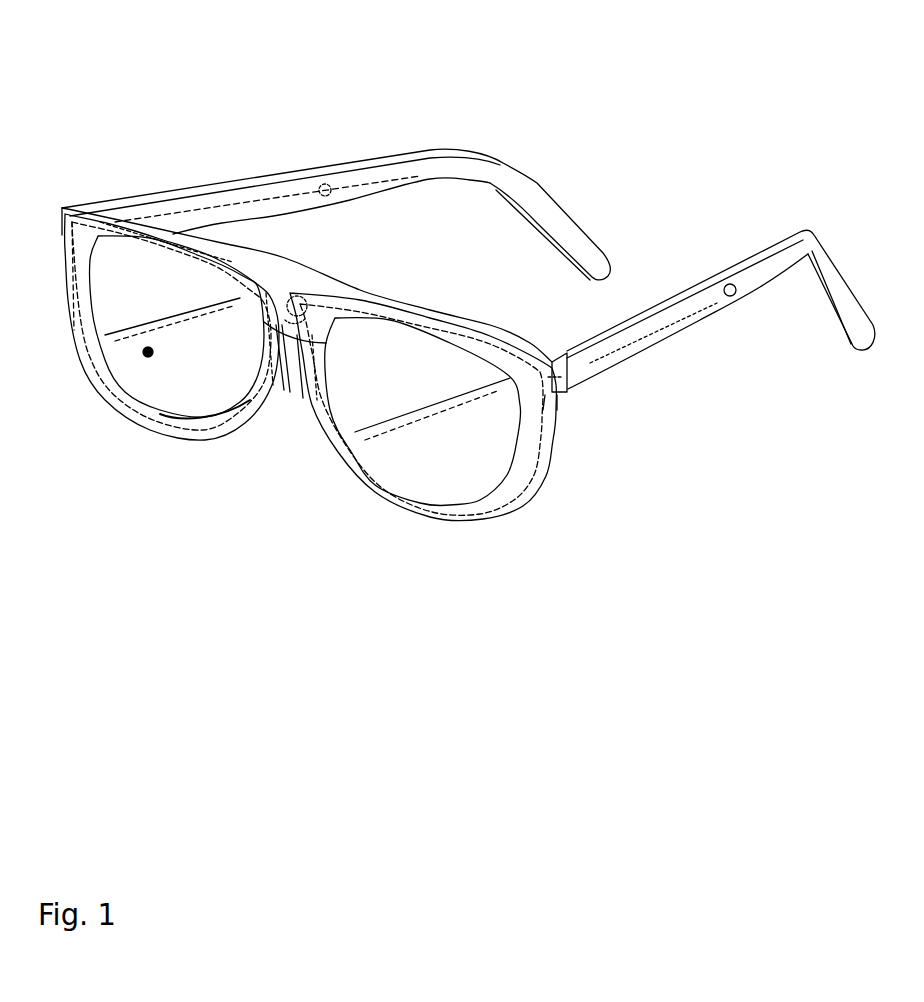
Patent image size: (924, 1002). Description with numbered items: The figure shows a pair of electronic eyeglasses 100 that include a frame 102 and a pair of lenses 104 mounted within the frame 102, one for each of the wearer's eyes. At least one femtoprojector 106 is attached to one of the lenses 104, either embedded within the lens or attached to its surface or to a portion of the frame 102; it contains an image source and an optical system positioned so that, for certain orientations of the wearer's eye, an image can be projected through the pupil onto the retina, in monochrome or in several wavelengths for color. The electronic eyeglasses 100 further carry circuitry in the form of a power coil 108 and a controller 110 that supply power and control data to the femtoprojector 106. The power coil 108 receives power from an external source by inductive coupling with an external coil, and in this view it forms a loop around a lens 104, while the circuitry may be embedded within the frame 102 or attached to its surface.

The electronic eyeglasses 100 is at (278, 112).
The frame 102 is at (637, 346).
The lenses 104 is at (200, 398).
The femtoprojector 106 is at (140, 357).
The power coil 108 is at (407, 500).
The controller 110 is at (292, 317).